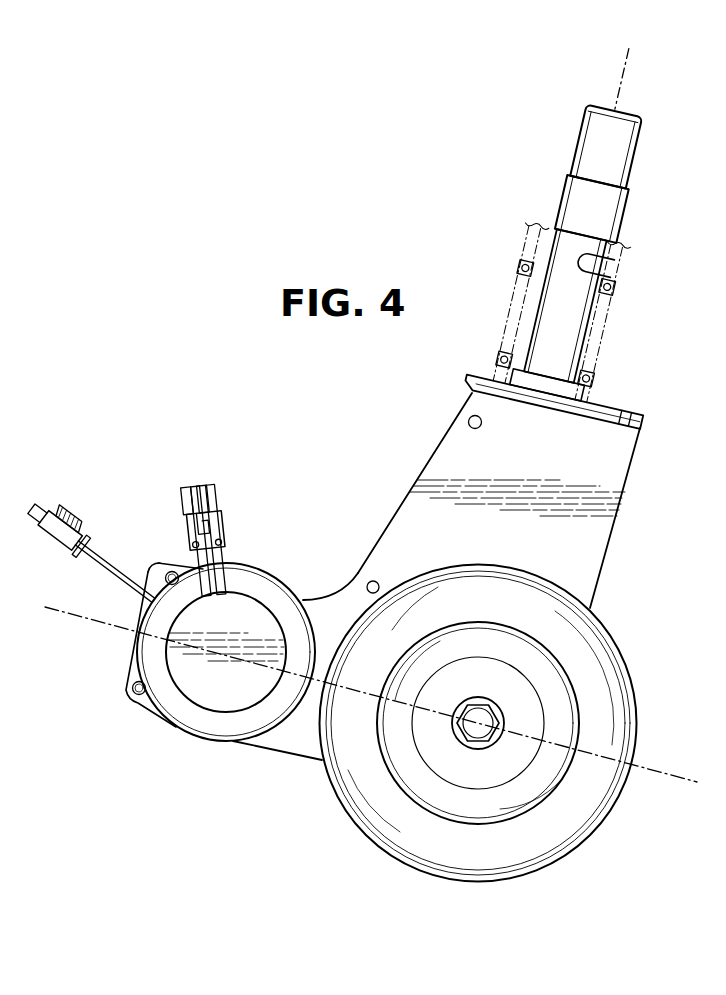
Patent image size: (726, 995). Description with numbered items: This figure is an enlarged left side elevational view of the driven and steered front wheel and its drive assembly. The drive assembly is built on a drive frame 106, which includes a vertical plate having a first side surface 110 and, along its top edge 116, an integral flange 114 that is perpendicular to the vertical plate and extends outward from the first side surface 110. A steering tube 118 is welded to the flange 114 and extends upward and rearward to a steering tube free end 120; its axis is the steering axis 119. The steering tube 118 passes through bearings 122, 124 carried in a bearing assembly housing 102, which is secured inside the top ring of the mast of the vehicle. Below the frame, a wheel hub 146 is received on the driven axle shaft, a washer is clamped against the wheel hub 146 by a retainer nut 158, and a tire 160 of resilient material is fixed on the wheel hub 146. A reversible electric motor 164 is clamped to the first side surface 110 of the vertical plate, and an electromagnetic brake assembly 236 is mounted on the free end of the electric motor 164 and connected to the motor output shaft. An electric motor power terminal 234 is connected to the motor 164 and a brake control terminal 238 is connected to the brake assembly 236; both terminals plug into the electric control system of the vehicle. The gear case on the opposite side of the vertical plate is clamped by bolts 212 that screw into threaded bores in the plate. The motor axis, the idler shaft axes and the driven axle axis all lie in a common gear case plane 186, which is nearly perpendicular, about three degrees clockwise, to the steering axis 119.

The bearing assembly housing 102 is at (620, 316).
The drive frame 106 is at (372, 540).
The first side surface 110 is at (590, 545).
The flange 114 is at (628, 412).
The top edge 116 is at (462, 397).
The steering tube 118 is at (560, 205).
The steering axis 119 is at (622, 86).
The steering tube free end 120 is at (603, 106).
The bearing 122 is at (535, 270).
The bearing 124 is at (518, 362).
The wheel hub 146 is at (405, 778).
The retainer nut 158 is at (495, 718).
The tire 160 is at (363, 832).
The reversible electric motor 164 is at (228, 755).
The common gear case plane 186 is at (647, 772).
The bolts 212 is at (134, 690).
The electric motor power terminal 234 is at (50, 545).
The electromagnetic brake assembly 236 is at (201, 693).
The brake control terminal 238 is at (195, 525).